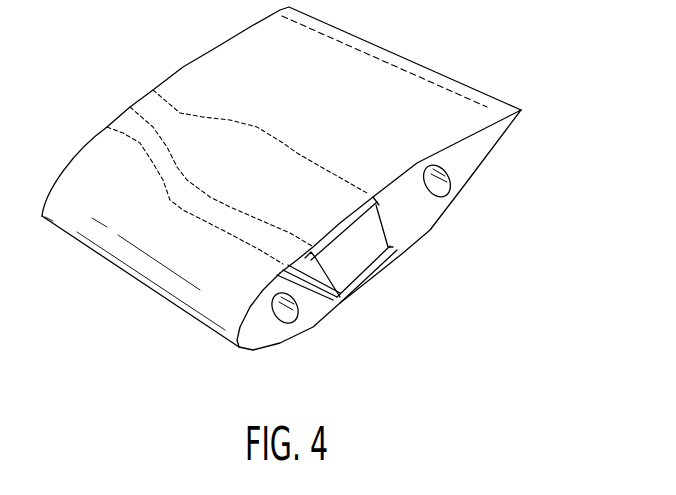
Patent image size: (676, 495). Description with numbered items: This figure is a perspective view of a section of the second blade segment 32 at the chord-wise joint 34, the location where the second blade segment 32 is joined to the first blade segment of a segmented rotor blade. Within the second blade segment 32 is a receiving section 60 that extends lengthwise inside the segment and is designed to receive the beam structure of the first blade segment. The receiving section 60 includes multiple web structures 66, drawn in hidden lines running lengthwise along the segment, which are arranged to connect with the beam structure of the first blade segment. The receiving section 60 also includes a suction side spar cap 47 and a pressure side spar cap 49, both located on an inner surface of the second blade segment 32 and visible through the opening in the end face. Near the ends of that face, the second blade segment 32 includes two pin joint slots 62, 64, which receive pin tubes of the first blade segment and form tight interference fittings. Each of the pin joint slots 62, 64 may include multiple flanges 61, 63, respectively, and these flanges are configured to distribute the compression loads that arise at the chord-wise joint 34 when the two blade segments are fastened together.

The second blade segment 32 is at (367, 45).
The chord-wise joint 34 is at (252, 333).
The suction side spar cap 47 is at (330, 233).
The pressure side spar cap 49 is at (357, 289).
The receiving section 60 is at (362, 265).
The flange 61 is at (266, 292).
The pin joint slot 62 is at (290, 313).
The flange 63 is at (427, 166).
The pin joint slot 64 is at (442, 185).
The web structures 66 is at (293, 150).